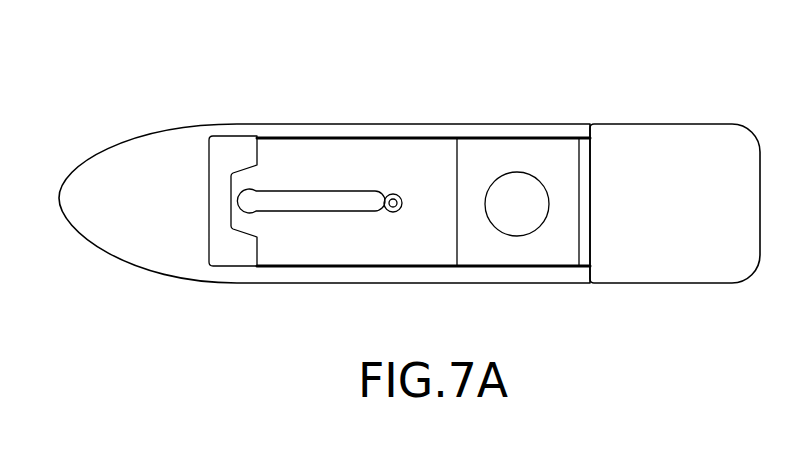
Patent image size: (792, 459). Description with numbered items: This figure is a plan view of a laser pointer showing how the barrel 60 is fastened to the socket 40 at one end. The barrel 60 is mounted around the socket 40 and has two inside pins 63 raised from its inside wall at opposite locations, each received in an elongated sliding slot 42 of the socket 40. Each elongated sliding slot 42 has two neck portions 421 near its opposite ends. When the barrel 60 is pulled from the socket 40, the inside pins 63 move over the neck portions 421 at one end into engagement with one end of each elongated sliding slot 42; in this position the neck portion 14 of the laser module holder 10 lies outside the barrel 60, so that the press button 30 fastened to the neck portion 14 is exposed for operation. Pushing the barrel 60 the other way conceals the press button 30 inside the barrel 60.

The laser module holder 10 is at (662, 111).
The neck portion 14 is at (548, 257).
The press button 30 is at (518, 187).
The socket 40 is at (368, 152).
The elongated sliding slot 42 is at (310, 191).
The neck portion 421 is at (383, 213).
The barrel 60 is at (145, 118).
The inside pin 63 is at (400, 208).